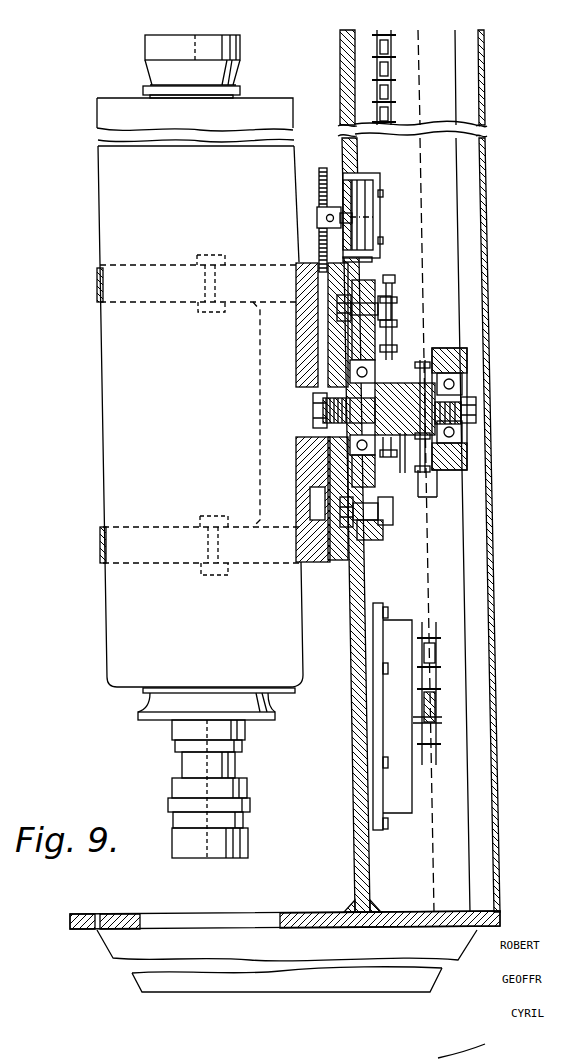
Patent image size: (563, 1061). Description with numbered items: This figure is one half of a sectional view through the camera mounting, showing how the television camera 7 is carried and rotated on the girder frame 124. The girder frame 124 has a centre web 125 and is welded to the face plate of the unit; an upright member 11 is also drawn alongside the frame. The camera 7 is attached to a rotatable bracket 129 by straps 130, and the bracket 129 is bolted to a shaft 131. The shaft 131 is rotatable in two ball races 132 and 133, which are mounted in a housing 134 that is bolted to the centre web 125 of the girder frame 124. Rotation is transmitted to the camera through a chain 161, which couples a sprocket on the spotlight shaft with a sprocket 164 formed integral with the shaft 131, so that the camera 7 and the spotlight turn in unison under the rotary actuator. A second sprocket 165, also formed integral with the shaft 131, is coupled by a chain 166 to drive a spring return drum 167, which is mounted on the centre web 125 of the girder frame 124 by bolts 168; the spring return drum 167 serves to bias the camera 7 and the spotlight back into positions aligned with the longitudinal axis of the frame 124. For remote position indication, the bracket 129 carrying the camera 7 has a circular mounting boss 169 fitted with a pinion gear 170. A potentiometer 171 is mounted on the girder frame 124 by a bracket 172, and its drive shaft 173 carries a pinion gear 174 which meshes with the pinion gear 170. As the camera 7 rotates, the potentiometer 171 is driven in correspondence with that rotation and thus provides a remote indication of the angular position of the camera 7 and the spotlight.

The television camera 7 is at (152, 446).
The upright channel member 11 is at (478, 104).
The girder frame 124 is at (480, 147).
The centre web 125 is at (347, 97).
The rotatable bracket 129 is at (310, 465).
The straps 130 is at (100, 540).
The shaft 131 is at (325, 400).
The ball race 132 is at (300, 440).
The ball race 133 is at (463, 375).
The housing 134 is at (447, 473).
The chain 161 is at (407, 397).
The sprocket 164 is at (403, 353).
The second sprocket 165 is at (450, 453).
The chain 166 is at (423, 357).
The spring return drum 167 is at (397, 785).
The bolts 168 is at (390, 827).
The circular mounting boss 169 is at (310, 372).
The pinion gear 170 is at (310, 318).
The potentiometer 171 is at (368, 233).
The bracket 172 is at (374, 206).
The drive shaft 173 is at (317, 216).
The pinion gear 174 is at (318, 190).